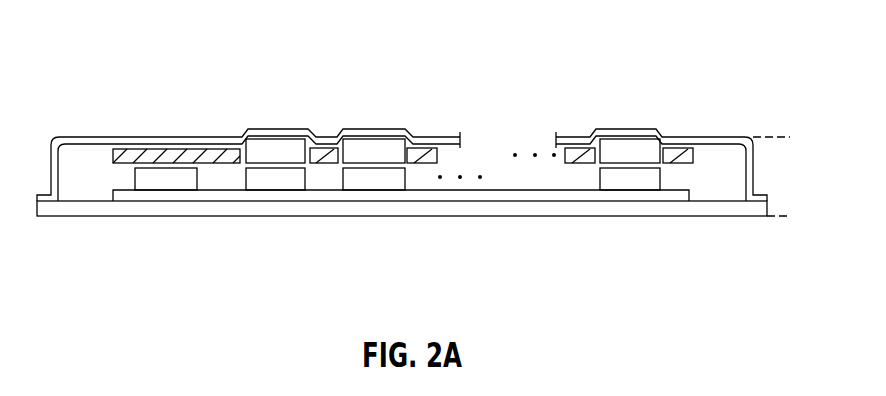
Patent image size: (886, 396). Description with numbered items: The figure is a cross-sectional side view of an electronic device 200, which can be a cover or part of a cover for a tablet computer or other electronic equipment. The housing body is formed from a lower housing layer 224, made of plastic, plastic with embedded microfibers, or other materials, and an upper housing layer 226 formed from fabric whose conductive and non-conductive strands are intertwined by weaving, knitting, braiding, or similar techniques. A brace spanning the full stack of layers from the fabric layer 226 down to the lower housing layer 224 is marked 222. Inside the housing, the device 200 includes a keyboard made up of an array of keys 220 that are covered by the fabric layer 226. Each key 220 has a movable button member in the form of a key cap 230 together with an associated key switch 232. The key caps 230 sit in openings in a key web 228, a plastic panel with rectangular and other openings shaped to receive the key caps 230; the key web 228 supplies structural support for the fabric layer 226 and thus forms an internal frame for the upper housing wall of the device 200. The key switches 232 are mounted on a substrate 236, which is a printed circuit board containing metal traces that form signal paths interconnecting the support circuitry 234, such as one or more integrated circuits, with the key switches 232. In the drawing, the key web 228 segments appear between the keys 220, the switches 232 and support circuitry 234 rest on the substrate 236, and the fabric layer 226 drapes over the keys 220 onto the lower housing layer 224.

The electronic device 200 is at (105, 30).
The key 220 is at (310, 122).
The package 222 is at (790, 137).
The lower housing layer 224 is at (627, 205).
The upper housing layer 226 is at (718, 137).
The key web 228 is at (138, 148).
The key cap 230 is at (255, 153).
The key switch 232 is at (275, 182).
The support circuitry 234 is at (175, 182).
The substrate 236 is at (120, 196).